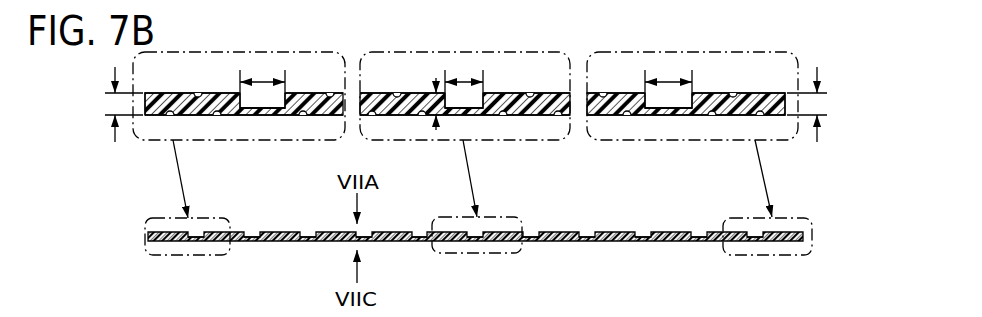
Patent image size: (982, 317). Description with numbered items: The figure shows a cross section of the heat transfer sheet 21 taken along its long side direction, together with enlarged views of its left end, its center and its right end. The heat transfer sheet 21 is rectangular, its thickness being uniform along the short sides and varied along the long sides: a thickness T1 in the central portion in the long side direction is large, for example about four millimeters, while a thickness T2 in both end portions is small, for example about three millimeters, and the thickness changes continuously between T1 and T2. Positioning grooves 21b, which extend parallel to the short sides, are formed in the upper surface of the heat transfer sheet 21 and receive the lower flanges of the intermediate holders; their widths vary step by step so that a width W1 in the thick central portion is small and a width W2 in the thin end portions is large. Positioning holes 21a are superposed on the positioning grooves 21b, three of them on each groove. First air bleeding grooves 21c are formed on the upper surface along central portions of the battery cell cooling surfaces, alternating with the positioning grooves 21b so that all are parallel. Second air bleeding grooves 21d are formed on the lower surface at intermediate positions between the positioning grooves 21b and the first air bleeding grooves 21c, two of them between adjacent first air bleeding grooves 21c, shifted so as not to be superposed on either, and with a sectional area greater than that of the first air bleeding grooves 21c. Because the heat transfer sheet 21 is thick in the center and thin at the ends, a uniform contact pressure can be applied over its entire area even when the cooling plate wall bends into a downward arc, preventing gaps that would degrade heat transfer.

The heat transfer sheet 21 is at (602, 224).
The positioning holes 21a is at (252, 116).
The positioning grooves 21b is at (241, 93).
The first air bleeding grooves 21c is at (197, 93).
The second air bleeding grooves 21d is at (217, 116).
The width of positioning groove in thick portion W1 is at (464, 73).
The width of positioning groove in thin portion W2 is at (466, 73).
The thickness in central portion T1 is at (434, 93).
The thickness in end portions T2 is at (114, 96).